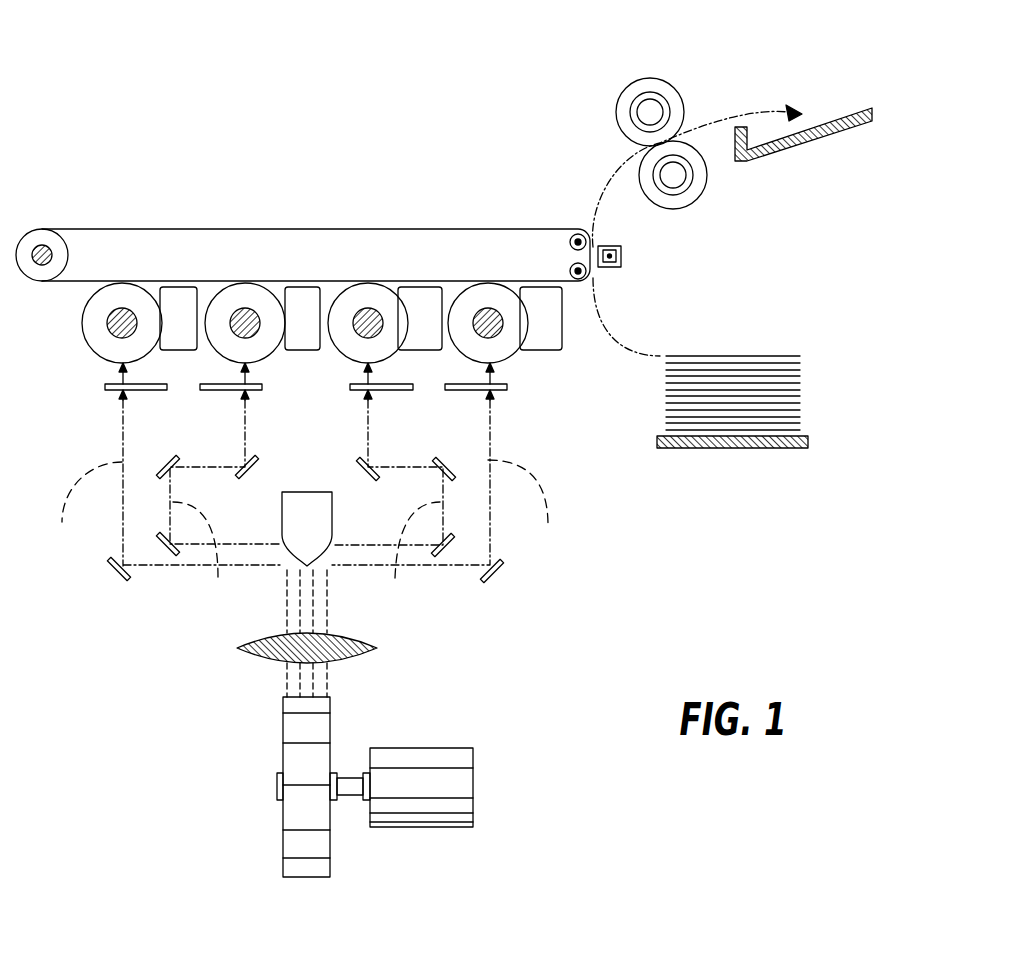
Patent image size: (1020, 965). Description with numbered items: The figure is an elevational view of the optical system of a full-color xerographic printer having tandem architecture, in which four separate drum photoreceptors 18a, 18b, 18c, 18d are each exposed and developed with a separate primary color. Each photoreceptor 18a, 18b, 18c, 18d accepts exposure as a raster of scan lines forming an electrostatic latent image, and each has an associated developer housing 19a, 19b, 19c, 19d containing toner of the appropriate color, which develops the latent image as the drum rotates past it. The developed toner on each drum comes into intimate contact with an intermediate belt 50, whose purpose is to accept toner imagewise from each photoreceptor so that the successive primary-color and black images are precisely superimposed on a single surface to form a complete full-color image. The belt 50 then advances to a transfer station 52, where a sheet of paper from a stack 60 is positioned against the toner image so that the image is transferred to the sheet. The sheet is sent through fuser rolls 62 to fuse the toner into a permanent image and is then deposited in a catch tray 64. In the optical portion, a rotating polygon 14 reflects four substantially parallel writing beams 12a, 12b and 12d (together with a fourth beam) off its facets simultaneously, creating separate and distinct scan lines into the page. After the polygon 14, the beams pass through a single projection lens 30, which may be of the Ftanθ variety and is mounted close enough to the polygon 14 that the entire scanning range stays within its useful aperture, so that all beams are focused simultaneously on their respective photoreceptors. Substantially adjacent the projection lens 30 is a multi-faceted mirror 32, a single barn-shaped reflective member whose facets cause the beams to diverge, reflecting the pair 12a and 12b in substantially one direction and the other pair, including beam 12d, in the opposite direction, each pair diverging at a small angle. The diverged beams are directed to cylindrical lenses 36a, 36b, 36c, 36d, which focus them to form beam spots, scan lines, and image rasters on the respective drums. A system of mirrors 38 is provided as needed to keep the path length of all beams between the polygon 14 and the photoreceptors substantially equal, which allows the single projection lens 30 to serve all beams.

The writing beam 12a is at (164, 483).
The writing beam 12b is at (306, 503).
The writing beam 12d is at (449, 482).
The rotating polygon 14 is at (282, 737).
The drum photoreceptor 18a is at (104, 290).
The drum photoreceptor 18b is at (228, 290).
The drum photoreceptor 18c is at (350, 290).
The drum photoreceptor 18d is at (470, 290).
The developer housing 19a is at (177, 350).
The developer housing 19b is at (302, 350).
The developer housing 19c is at (420, 350).
The developer housing 19d is at (541, 350).
The projection lens 30 is at (377, 652).
The multi-faceted mirror 32 is at (298, 492).
The cylindrical lens 36a is at (122, 390).
The cylindrical lens 36b is at (245, 390).
The cylindrical lens 36c is at (368, 390).
The cylindrical lens 36d is at (490, 390).
The system of mirrors 38 is at (257, 470).
The intermediate belt 50 is at (513, 229).
The transfer station 52 is at (622, 255).
The stack 60 is at (733, 356).
The fuser rolls 62 is at (617, 112).
The catch tray 64 is at (778, 150).